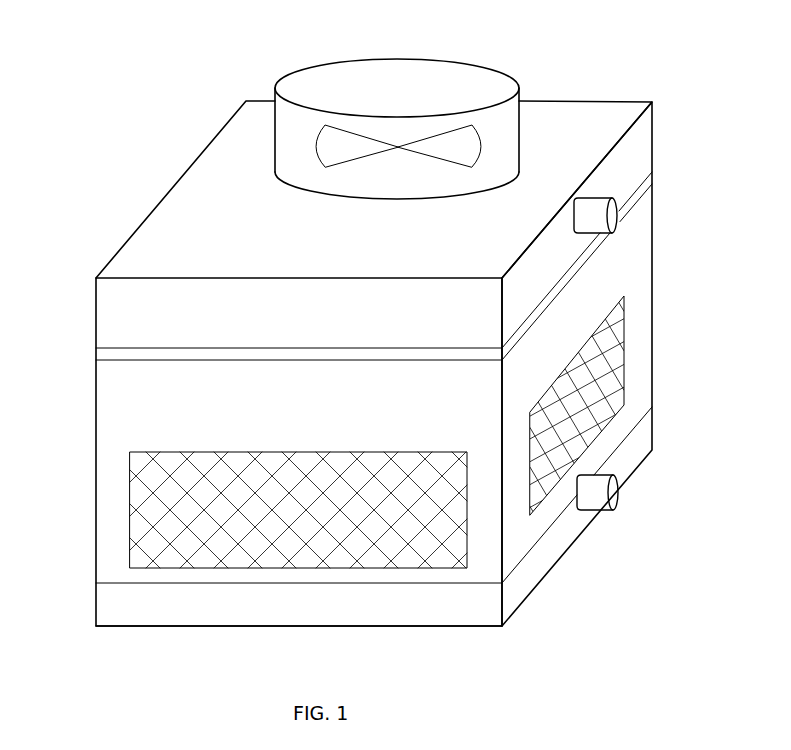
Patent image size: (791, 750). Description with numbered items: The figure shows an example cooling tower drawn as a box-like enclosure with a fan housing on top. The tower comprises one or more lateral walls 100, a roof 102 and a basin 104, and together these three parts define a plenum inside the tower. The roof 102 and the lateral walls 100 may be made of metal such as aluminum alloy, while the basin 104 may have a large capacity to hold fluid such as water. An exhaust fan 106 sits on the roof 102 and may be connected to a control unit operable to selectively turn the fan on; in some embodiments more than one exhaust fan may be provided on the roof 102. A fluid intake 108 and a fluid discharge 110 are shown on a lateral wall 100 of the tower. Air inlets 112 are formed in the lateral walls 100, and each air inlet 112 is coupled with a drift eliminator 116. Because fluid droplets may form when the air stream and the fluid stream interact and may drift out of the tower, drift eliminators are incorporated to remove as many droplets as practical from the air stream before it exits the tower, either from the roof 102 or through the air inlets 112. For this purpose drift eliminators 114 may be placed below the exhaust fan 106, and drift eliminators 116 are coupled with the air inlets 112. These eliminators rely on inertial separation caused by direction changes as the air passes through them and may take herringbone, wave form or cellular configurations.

The lateral walls 100 is at (117, 392).
The roof 102 is at (577, 117).
The basin 104 is at (163, 607).
The exhaust fan 106 is at (472, 82).
The fluid intake 108 is at (614, 208).
The fluid discharge 110 is at (616, 492).
The air inlets 112 is at (253, 452).
The drift eliminators 114 is at (183, 352).
The drift eliminator 116 is at (315, 480).